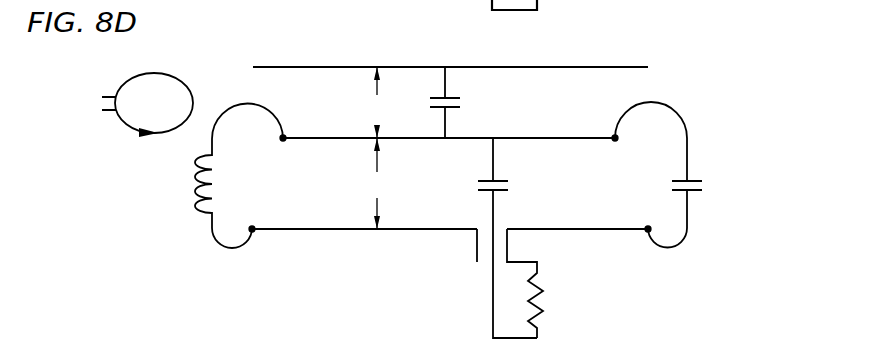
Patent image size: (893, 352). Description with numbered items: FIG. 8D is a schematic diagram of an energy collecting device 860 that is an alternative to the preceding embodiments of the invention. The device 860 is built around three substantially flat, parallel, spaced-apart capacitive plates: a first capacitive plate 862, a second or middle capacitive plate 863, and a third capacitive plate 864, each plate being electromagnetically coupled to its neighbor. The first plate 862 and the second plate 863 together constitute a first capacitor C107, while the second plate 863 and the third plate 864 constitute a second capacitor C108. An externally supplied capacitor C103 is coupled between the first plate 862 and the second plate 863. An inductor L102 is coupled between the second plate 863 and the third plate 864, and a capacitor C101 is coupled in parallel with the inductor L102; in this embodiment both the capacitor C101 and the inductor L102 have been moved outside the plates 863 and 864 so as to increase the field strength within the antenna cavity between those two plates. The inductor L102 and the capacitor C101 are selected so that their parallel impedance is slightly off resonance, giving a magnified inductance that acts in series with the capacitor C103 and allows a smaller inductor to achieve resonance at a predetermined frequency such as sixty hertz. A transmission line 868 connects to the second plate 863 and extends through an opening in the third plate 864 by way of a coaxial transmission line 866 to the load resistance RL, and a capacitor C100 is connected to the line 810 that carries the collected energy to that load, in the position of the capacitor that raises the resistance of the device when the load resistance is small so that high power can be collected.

The device for collecting energy 860 is at (706, 75).
The first capacitive plate 862 is at (600, 67).
The second capacitive plate 863 is at (537, 138).
The third capacitive plate 864 is at (380, 229).
The coaxial transmission line 866 is at (477, 248).
The transmission line 868 is at (503, 229).
The line 810 is at (493, 308).
The capacitor C100 is at (516, 164).
The capacitor C101 is at (690, 175).
The externally supplied capacitor C103 is at (474, 102).
The first capacitor C107 is at (372, 102).
The second capacitor C108 is at (373, 183).
The inductor L102 is at (207, 175).